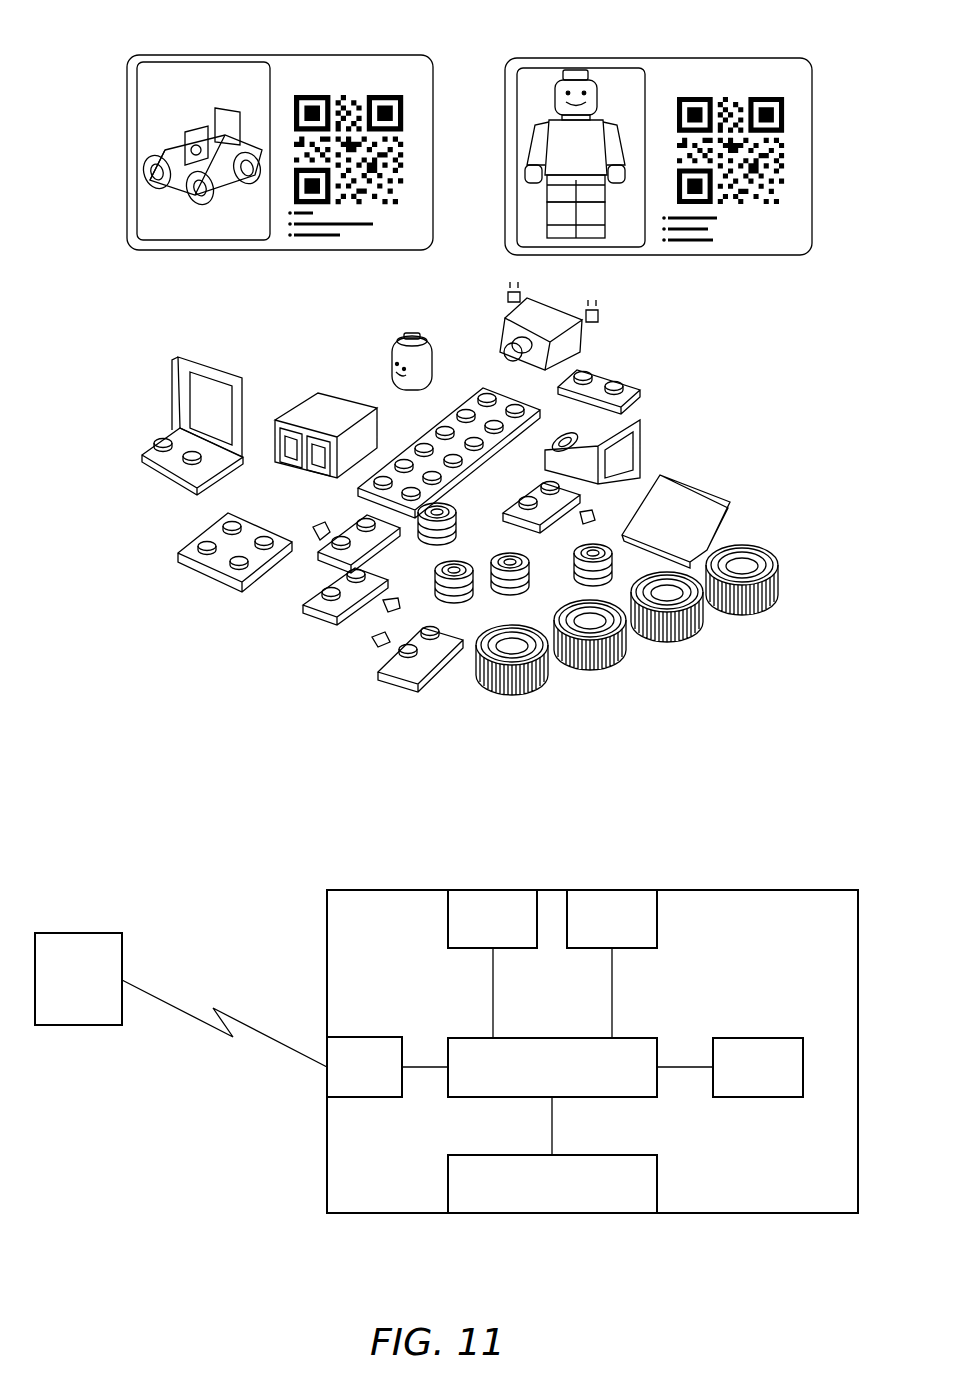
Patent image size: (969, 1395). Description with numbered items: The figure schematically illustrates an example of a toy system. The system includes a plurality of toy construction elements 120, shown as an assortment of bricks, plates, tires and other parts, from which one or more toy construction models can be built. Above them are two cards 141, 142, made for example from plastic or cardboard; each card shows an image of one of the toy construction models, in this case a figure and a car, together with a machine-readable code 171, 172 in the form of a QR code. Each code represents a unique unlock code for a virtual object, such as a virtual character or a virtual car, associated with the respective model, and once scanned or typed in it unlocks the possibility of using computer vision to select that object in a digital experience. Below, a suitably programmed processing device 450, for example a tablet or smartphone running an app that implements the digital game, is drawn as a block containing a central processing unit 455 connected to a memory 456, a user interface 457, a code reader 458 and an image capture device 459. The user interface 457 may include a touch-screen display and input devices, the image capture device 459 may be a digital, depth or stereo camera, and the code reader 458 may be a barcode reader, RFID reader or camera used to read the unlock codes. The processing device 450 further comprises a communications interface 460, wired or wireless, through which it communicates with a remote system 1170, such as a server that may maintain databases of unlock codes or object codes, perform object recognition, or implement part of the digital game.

The card 141 is at (622, 58).
The card 142 is at (223, 58).
The machine-readable code 171 is at (775, 157).
The machine-readable code 172 is at (343, 100).
The toy construction elements 120 is at (267, 640).
The remote system 1170 is at (78, 933).
The processing device 450 is at (529, 1057).
The central processing unit 455 is at (580, 1096).
The memory 456 is at (758, 1067).
The user interface 457 is at (552, 1184).
The code reader 458 is at (492, 964).
The image capture device 459 is at (612, 964).
The communications interface 460 is at (387, 1067).